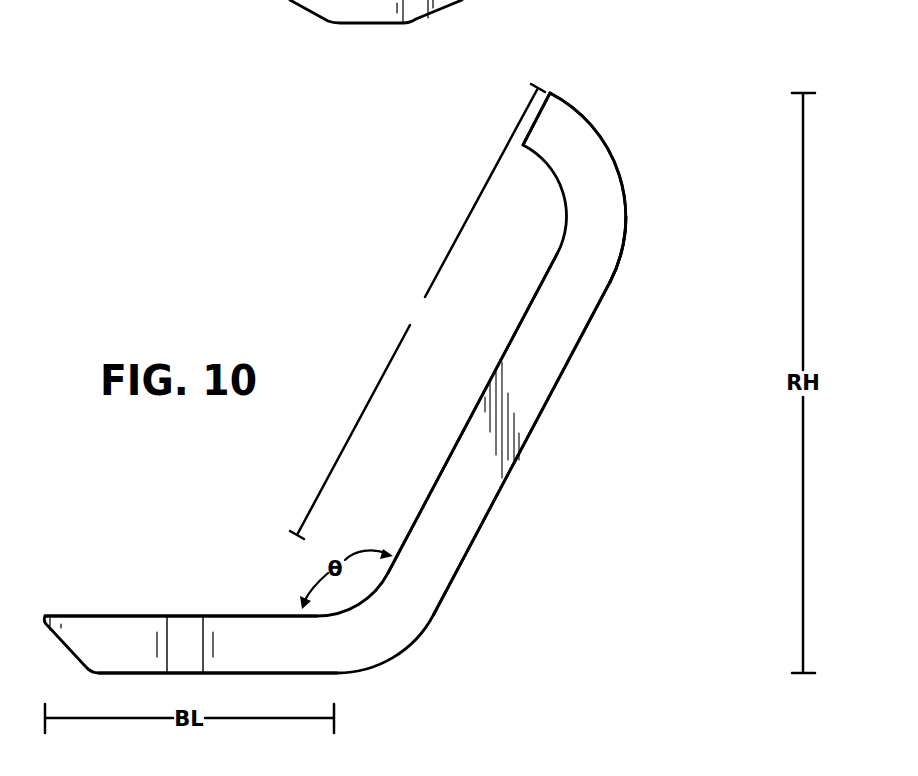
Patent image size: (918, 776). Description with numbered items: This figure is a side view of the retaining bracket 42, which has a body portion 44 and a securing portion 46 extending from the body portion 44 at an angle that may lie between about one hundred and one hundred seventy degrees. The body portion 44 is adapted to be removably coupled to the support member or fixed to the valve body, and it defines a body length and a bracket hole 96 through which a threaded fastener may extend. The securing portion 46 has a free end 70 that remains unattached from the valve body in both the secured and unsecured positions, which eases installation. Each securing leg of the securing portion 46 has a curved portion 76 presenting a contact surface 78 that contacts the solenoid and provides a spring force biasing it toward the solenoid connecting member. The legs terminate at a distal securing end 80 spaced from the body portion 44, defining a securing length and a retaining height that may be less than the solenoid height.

The retaining bracket 42 is at (220, 286).
The body portion 44 is at (108, 582).
The securing portion 46 is at (410, 275).
The free end 70 is at (462, 142).
The curved portion 76 is at (610, 205).
The contact surface 78 is at (603, 137).
The distal securing end 80 is at (549, 94).
The bracket hole 96 is at (166, 641).